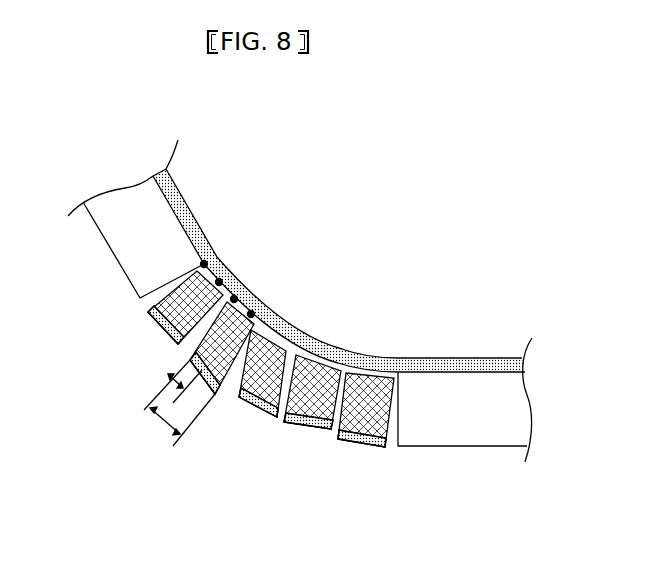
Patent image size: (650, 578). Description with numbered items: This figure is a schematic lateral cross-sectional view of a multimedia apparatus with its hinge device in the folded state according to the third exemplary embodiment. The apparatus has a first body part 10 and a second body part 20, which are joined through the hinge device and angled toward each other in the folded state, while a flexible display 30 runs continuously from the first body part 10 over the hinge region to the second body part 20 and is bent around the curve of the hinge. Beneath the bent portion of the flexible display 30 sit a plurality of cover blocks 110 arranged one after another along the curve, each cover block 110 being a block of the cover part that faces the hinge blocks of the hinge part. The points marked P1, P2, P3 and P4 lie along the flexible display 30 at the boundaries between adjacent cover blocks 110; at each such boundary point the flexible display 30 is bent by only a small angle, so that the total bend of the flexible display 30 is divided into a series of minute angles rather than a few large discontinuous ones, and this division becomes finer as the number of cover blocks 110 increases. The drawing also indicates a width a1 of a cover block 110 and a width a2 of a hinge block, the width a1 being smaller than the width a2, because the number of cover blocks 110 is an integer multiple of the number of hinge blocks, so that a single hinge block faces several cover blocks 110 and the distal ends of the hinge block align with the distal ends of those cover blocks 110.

The first body part 10 is at (120, 231).
The second body part 20 is at (469, 417).
The flexible display 30 is at (419, 350).
The cover block 110 is at (206, 262).
The boundary point P1 is at (196, 252).
The boundary point P2 is at (213, 272).
The third bending point P3 is at (228, 289).
The fourth bending point P4 is at (245, 304).
The width of the cover block a1 is at (163, 376).
The width of the hinge block a2 is at (176, 420).